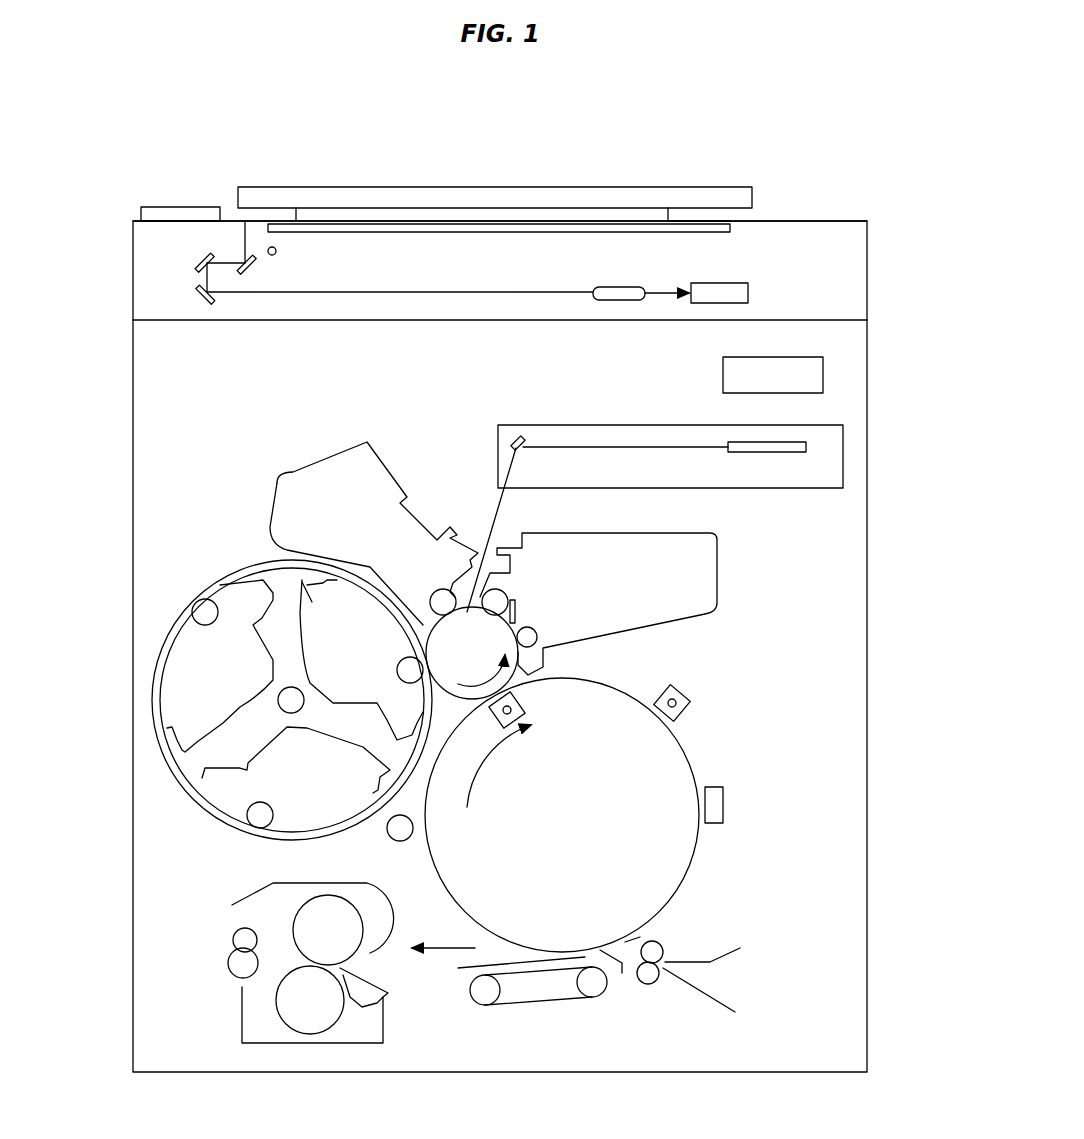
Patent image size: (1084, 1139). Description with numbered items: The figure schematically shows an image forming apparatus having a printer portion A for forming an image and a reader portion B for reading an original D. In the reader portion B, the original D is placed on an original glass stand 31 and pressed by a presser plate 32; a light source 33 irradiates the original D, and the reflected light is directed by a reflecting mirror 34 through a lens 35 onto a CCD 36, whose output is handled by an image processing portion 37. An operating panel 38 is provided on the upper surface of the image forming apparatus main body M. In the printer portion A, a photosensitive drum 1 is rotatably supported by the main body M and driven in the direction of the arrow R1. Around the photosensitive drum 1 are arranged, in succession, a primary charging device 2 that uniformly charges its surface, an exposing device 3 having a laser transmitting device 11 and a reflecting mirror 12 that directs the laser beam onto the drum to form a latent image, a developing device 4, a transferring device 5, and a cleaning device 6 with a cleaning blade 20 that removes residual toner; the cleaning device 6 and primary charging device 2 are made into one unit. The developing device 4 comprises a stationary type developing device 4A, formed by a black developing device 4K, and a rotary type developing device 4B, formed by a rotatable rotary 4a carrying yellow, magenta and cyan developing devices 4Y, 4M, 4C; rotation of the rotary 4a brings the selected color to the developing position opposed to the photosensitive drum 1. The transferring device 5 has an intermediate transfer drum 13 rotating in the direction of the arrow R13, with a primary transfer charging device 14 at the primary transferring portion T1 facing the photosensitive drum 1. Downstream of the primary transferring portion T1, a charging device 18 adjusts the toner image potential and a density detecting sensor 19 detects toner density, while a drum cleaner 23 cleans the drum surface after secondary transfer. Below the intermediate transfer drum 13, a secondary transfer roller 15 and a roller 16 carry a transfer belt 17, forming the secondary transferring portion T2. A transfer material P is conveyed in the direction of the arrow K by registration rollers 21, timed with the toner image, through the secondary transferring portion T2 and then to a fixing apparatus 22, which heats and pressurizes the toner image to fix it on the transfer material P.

The printer portion A is at (870, 533).
The reader portion B is at (870, 272).
The image forming apparatus main body M is at (800, 221).
The original D is at (480, 212).
The operating panel 38 is at (165, 207).
The presser plate 32 is at (633, 197).
The original glass stand 31 is at (707, 226).
The light source 33 is at (278, 252).
The reflecting mirror 34 is at (195, 293).
The lens 35 is at (615, 287).
The CCD 36 is at (751, 292).
The image processing portion 37 is at (723, 373).
The exposing device 3 is at (550, 423).
The laser transmitting device 11 is at (772, 453).
The reflecting mirror 12 is at (512, 440).
The photosensitive drum 1 is at (466, 622).
The direction of rotation of the photosensitive drum R1 is at (481, 668).
The primary charging device 2 is at (515, 597).
The cleaning blade 20 is at (510, 598).
The cleaning device 6 is at (518, 608).
The developing device 4 is at (263, 516).
The rotary 4a is at (168, 768).
The black developing device 4K is at (348, 472).
The stationary type developing device 4A is at (308, 463).
The rotary type developing device 4B is at (217, 576).
The yellow developing device 4Y is at (302, 607).
The magenta developing device 4M is at (190, 648).
The cyan developing device 4C is at (238, 787).
The drum cleaner 23 is at (392, 835).
The intermediate transfer drum 13 is at (677, 752).
The transferring device 5 is at (628, 684).
The direction of rotation of the intermediate transfer drum R13 is at (501, 766).
The primary transferring portion T1 is at (483, 690).
The primary transfer charging device 14 is at (527, 705).
The charging device 18 is at (680, 692).
The density detecting sensor 19 is at (723, 803).
The secondary transferring portion T2 is at (587, 957).
The transfer belt 17 is at (540, 1002).
The roller 16 is at (483, 997).
The secondary transfer roller 15 is at (597, 987).
The transfer material P is at (460, 967).
The conveying direction of the transfer material K is at (443, 932).
The registration rollers 21 is at (662, 942).
The fixing apparatus 22 is at (232, 943).